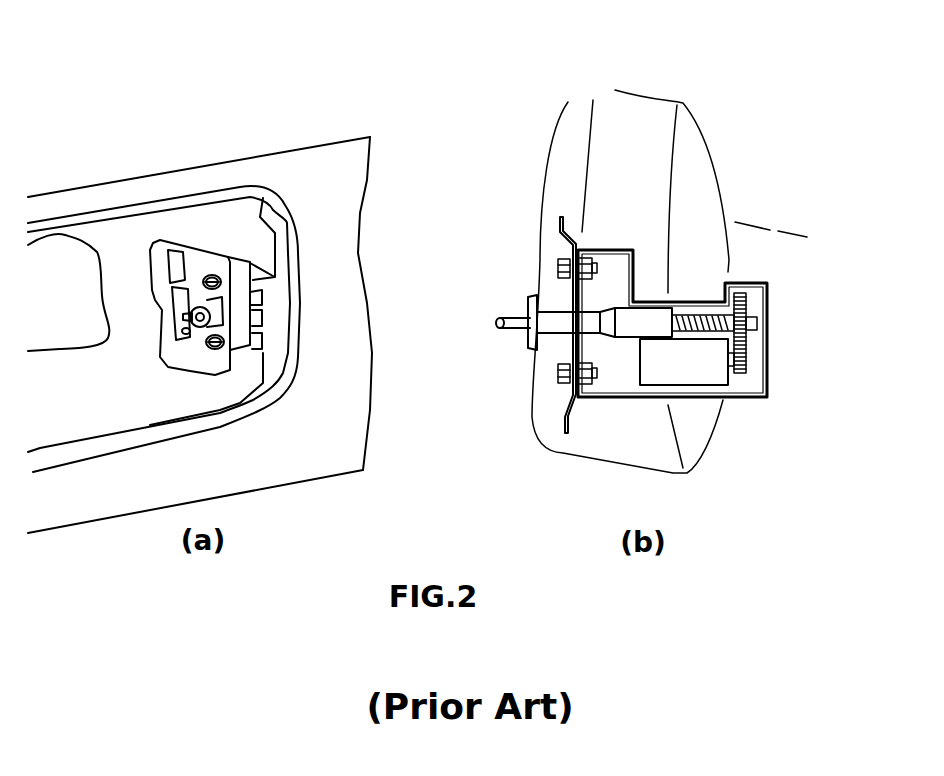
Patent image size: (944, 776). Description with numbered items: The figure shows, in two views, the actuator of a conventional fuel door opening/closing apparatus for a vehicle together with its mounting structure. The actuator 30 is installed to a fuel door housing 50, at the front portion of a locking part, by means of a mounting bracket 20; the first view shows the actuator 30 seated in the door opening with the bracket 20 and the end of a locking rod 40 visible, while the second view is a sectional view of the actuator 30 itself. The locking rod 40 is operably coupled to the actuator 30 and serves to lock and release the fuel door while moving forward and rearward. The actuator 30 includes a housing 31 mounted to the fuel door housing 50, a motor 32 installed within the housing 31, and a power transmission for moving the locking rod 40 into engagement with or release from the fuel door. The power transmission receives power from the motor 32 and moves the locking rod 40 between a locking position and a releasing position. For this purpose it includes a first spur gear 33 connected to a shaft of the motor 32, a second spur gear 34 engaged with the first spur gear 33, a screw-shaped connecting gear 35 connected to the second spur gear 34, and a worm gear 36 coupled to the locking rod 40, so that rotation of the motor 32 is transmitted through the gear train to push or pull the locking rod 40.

The mounting bracket 20 is at (198, 260).
The actuator 30 is at (236, 253).
The locking rod 40 is at (184, 317).
The fuel door housing 50 is at (637, 153).
The housing 31 is at (767, 385).
The motor 32 is at (685, 370).
The first spur gear 33 is at (747, 365).
The second spur gear 34 is at (747, 303).
The connecting gear 35 is at (700, 302).
The worm gear 36 is at (628, 318).